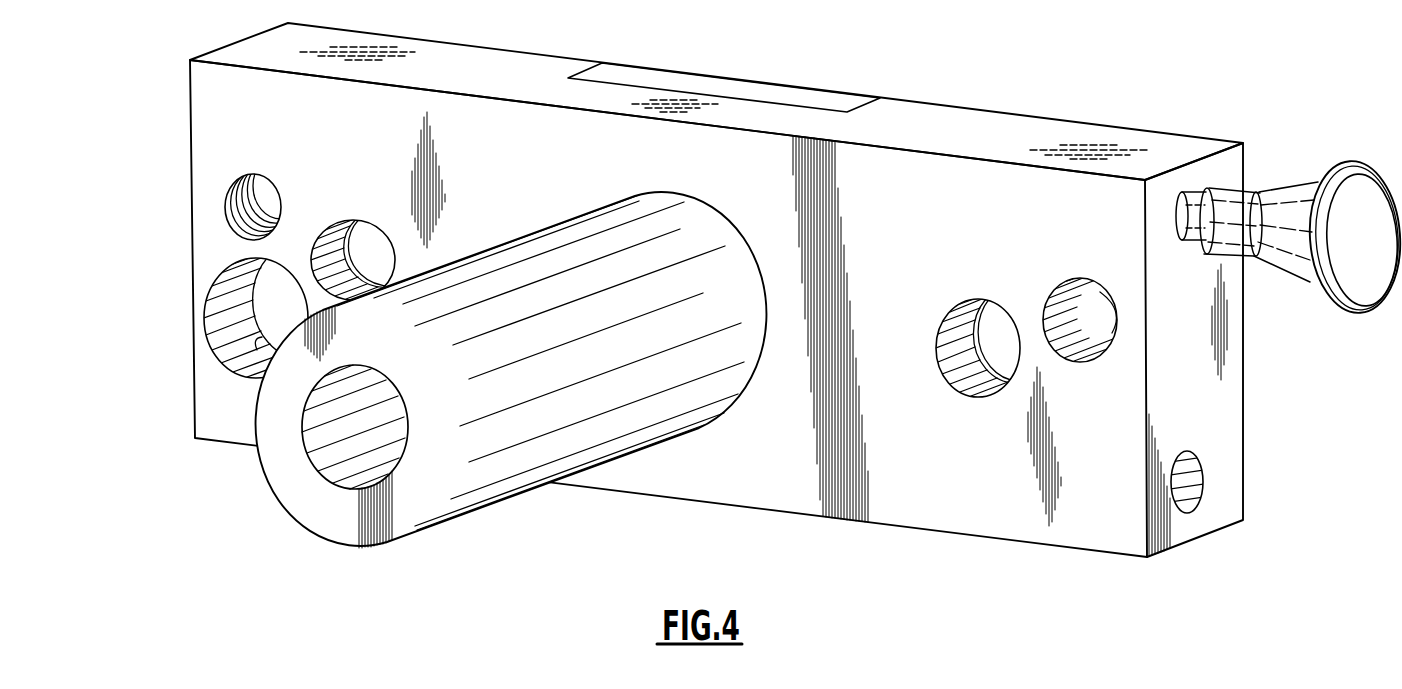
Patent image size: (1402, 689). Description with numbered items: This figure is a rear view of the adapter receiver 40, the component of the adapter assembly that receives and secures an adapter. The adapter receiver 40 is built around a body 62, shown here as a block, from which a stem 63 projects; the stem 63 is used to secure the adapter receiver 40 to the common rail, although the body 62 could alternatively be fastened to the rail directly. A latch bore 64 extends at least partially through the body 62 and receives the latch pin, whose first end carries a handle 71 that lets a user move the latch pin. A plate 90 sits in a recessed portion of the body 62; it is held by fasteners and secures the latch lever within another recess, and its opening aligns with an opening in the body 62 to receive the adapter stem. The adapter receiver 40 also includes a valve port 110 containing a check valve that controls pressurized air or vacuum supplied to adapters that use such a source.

The adapter receiver 40 is at (1020, 112).
The body 62 is at (1222, 412).
The stem 63 is at (452, 517).
The latch bore 64 is at (1195, 195).
The handle 71 is at (1342, 312).
The plate 90 is at (820, 92).
The valve port 110 is at (225, 335).